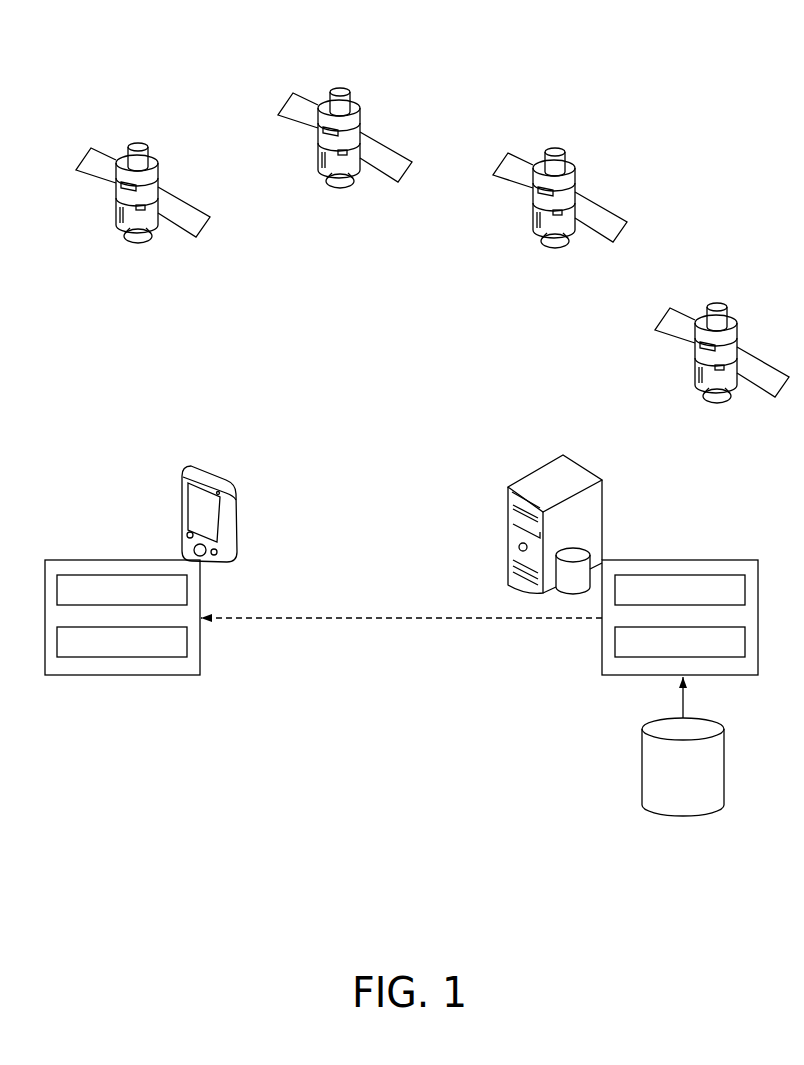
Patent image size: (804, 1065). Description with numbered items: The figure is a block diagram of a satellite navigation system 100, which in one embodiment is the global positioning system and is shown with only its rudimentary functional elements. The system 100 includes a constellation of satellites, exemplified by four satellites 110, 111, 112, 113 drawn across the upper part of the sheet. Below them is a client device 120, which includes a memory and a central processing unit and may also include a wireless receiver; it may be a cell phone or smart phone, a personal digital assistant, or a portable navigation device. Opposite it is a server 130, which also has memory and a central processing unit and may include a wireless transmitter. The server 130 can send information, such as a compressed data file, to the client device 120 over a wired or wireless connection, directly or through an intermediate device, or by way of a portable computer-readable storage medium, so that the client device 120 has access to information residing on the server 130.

The satellite navigation system 100 is at (748, 49).
The satellite 110 is at (87, 153).
The satellite 111 is at (320, 97).
The satellite 112 is at (582, 192).
The satellite 113 is at (733, 312).
The client device 120 is at (162, 525).
The server 130 is at (633, 533).